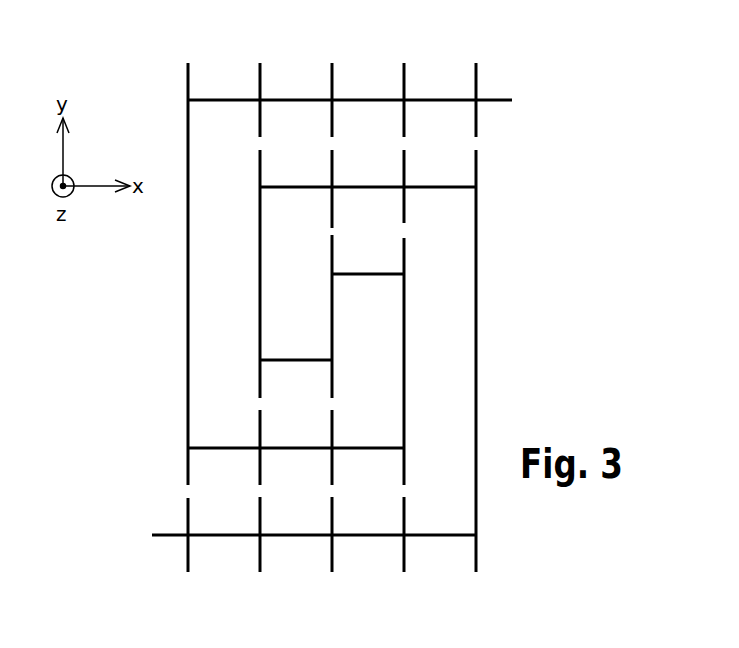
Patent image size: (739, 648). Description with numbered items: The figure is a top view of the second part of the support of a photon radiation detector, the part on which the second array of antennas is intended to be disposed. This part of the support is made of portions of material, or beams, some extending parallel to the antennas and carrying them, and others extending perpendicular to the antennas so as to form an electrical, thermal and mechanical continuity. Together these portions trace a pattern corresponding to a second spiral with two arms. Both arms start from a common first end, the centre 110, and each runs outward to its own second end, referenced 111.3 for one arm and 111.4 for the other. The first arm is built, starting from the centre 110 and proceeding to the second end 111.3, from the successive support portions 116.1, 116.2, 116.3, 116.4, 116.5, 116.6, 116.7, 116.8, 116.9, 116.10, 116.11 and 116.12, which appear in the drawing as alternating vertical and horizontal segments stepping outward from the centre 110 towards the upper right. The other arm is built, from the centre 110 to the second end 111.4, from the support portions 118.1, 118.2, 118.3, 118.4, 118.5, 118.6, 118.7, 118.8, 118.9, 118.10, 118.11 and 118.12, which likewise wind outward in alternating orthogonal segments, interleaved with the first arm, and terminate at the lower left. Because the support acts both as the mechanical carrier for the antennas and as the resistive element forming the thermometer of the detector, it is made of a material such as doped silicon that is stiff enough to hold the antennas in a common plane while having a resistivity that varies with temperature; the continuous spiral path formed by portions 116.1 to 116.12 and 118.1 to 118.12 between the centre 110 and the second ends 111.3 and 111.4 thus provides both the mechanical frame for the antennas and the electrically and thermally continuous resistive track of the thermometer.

The centre 110 is at (330, 315).
The second end 111.3 is at (512, 100).
The second end 111.4 is at (168, 533).
The portion of the support 116.1 is at (334, 282).
The portion of the support 116.2 is at (367, 273).
The portion of the support 116.3 is at (406, 305).
The portion of the support 116.4 is at (365, 447).
The portion of the support 116.5 is at (334, 462).
The portion of the support 116.6 is at (262, 462).
The portion of the support 116.7 is at (187, 410).
The portion of the support 116.8 is at (213, 99).
The portion of the support 116.9 is at (262, 80).
The portion of the support 116.10 is at (334, 82).
The portion of the support 116.11 is at (406, 82).
The portion of the support 116.12 is at (478, 75).
The portion of the support 118.1 is at (332, 333).
The portion of the support 118.2 is at (293, 362).
The portion of the support 118.3 is at (259, 282).
The portion of the support 118.4 is at (288, 186).
The portion of the support 118.5 is at (334, 172).
The portion of the support 118.6 is at (406, 170).
The portion of the support 118.7 is at (478, 220).
The portion of the support 118.8 is at (425, 534).
The portion of the support 118.9 is at (402, 573).
The portion of the support 118.10 is at (330, 573).
The portion of the support 118.11 is at (258, 573).
The portion of the support 118.12 is at (187, 553).